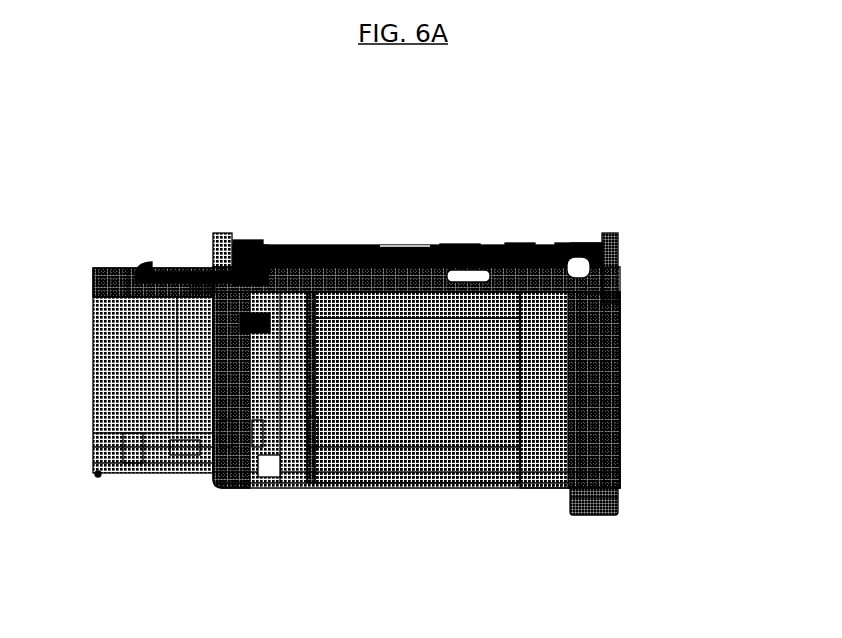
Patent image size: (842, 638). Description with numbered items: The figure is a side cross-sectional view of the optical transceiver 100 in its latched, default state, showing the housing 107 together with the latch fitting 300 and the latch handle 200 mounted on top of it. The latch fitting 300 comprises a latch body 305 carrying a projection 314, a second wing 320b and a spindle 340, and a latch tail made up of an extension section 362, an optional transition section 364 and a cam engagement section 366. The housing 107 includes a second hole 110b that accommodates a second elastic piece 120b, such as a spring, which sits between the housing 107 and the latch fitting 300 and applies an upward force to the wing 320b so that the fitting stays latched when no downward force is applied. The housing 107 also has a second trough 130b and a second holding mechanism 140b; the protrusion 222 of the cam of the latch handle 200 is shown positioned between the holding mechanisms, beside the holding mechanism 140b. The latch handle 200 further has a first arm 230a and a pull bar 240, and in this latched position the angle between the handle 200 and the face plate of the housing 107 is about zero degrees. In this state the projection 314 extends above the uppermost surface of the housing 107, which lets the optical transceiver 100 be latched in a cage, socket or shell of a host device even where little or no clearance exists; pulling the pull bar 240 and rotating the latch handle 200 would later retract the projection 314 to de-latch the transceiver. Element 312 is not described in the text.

The optical transceiver 100 is at (450, 507).
The housing 107 is at (431, 381).
The second hole 110b is at (240, 333).
The second elastic piece 120b is at (260, 263).
The second trough 130b is at (450, 282).
The second holding mechanism 140b is at (565, 265).
The latch handle 200 is at (652, 427).
The protrusion 222 is at (595, 295).
The first arm 230a is at (618, 395).
The pull bar 240 is at (618, 505).
The latch fitting 300 is at (380, 266).
The latch body 305 is at (402, 245).
The cover flange 312 is at (197, 287).
The projection 314 is at (148, 263).
The second wing 320b is at (250, 247).
The spindle 340 is at (460, 247).
The extension section 362 is at (520, 243).
The transition section 364 is at (560, 245).
The cam engagement section 366 is at (580, 247).